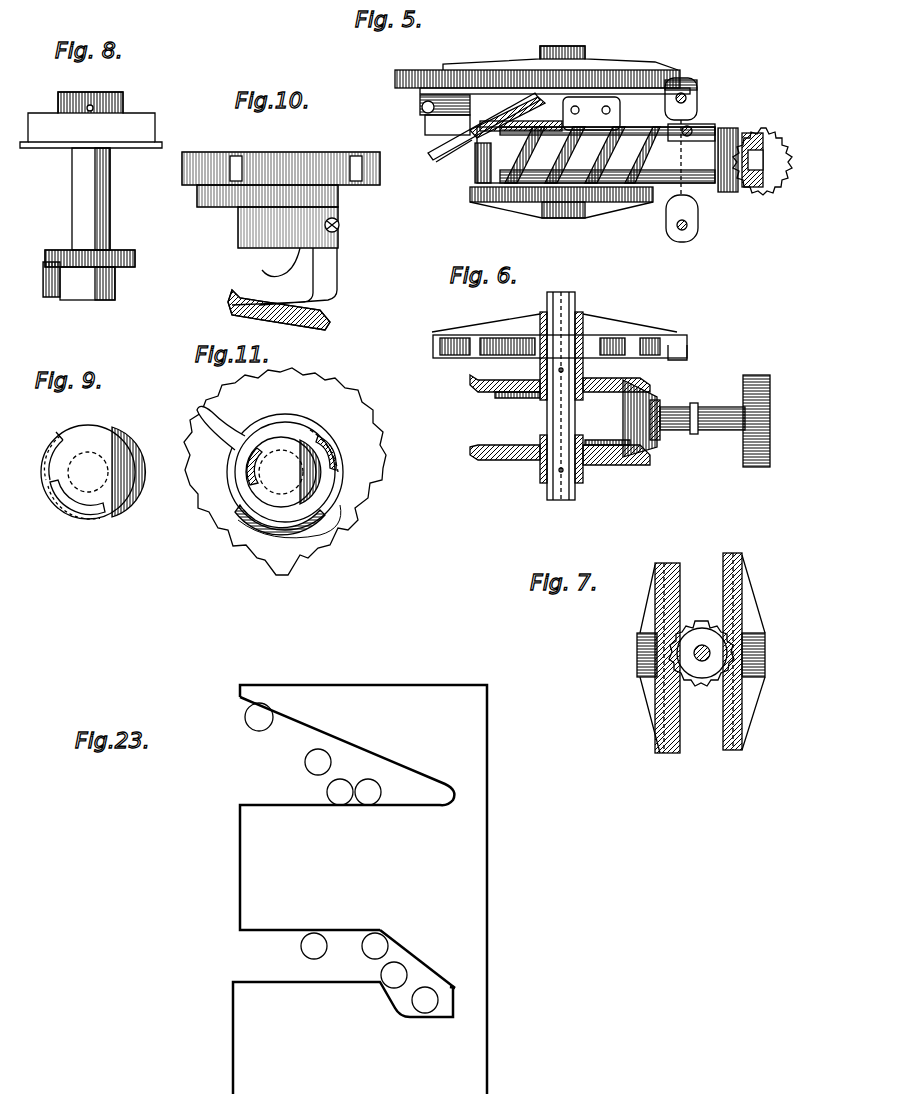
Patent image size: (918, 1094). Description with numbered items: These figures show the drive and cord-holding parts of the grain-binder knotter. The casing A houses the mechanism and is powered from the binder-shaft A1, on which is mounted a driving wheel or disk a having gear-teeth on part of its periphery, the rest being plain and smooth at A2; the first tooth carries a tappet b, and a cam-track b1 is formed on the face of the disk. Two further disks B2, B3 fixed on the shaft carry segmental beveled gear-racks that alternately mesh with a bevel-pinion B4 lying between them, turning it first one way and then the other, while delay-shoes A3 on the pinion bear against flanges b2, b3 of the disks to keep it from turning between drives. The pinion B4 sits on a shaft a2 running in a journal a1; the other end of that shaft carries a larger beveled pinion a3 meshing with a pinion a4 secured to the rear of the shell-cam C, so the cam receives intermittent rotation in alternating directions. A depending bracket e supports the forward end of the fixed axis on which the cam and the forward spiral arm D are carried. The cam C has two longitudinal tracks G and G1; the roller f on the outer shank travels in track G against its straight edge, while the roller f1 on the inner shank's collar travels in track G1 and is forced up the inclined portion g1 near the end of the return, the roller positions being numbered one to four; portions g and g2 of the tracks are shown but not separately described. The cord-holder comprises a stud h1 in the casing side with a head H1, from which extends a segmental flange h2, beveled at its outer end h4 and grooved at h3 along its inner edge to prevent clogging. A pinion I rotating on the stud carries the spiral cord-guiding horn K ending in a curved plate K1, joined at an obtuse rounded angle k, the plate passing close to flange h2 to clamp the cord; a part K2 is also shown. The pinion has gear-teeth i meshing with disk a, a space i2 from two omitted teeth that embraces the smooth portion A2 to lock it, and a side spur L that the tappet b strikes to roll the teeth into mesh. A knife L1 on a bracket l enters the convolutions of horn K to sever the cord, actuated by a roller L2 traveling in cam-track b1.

In FIG. 8, the casing A is at (128, 112).
In FIG. 8, the stud h1 is at (80, 210).
In FIG. 9, the stud h1 is at (88, 472).
In FIG. 8, the segmental flange h2 is at (92, 300).
In FIG. 9, the segmental flange h2 is at (70, 506).
In FIG. 11, the segmental flange h2 is at (281, 478).
In FIG. 5, the segmental flange h2 is at (480, 103).
In FIG. 8, the recess or groove h3 is at (46, 258).
In FIG. 8, the beveled outer end h4 is at (50, 297).
In FIG. 9, the beveled outer end h4 is at (62, 437).
In FIG. 11, the beveled outer end h4 is at (266, 462).
In FIG. 5, the beveled outer end h4 is at (424, 138).
In FIG. 8, the head H1 is at (118, 266).
In FIG. 9, the head H1 is at (93, 472).
In FIG. 11, the head H1 is at (283, 472).
In FIG. 5, the head H1 is at (431, 115).
In FIG. 10, the pinion I is at (243, 152).
In FIG. 11, the pinion I is at (284, 418).
In FIG. 5, the pinion I is at (421, 70).
In FIG. 10, the gear-teeth i is at (356, 168).
In FIG. 11, the gear-teeth i is at (330, 392).
In FIG. 10, the space i2 is at (237, 168).
In FIG. 11, the space i2 is at (248, 402).
In FIG. 10, the side spur L is at (210, 207).
In FIG. 11, the side spur L is at (270, 463).
In FIG. 10, the obtuse rounded angle k is at (282, 272).
In FIG. 10, the spiral cord-guiding horn K is at (310, 326).
In FIG. 11, the spiral cord-guiding horn K is at (298, 522).
In FIG. 5, the spiral cord-guiding horn K is at (446, 162).
In FIG. 11, the curved plate K1 is at (340, 470).
In FIG. 5, the curved plate K1 is at (422, 122).
In FIG. 10, the spring block K2 is at (328, 270).
In FIG. 5, the knife L1 is at (474, 131).
In FIG. 5, the projecting roller L2 is at (598, 97).
In FIG. 5, the bracket l is at (507, 113).
In FIG. 6, the binder-shaft A1 is at (565, 495).
In FIG. 5, the plain smooth portion of periphery A2 is at (518, 62).
In FIG. 6, the plain smooth portion of periphery A2 is at (433, 336).
In FIG. 7, the delay-shoes A3 is at (672, 665).
In FIG. 5, the driving wheel or disk a is at (620, 64).
In FIG. 6, the driving wheel or disk a is at (560, 346).
In FIG. 6, the journal a1 is at (716, 410).
In FIG. 6, the shaft a2 is at (697, 419).
In FIG. 7, the shaft a2 is at (702, 662).
In FIG. 5, the beveled pinion a3 is at (772, 161).
In FIG. 6, the beveled pinion a3 is at (770, 420).
In FIG. 5, the pinion a4 is at (728, 192).
In FIG. 5, the disk B2 is at (510, 131).
In FIG. 6, the disk B2 is at (471, 388).
In FIG. 7, the disk B2 is at (676, 562).
In FIG. 5, the disk B3 is at (470, 195).
In FIG. 6, the disk B3 is at (471, 453).
In FIG. 7, the disk B3 is at (733, 553).
In FIG. 6, the bevel-pinion B4 is at (624, 416).
In FIG. 7, the bevel-pinion B4 is at (702, 622).
In FIG. 5, the tappet b is at (700, 97).
In FIG. 6, the tappet b is at (687, 358).
In FIG. 6, the cam-track b1 is at (640, 358).
In FIG. 6, the flange b2 is at (657, 395).
In FIG. 7, the flange b2 is at (728, 560).
In FIG. 6, the flange b3 is at (658, 450).
In FIG. 7, the flange b3 is at (679, 560).
In FIG. 5, the shell-cam C is at (596, 155).
In FIG. 23, the shell-cam C is at (363, 889).
In FIG. 5, the forward spiral arm D is at (582, 155).
In FIG. 5, the depending bracket e is at (476, 165).
In FIG. 23, the pin and roller f is at (266, 705).
In FIG. 5, the anti-friction roller f1 is at (695, 126).
In FIG. 23, the anti-friction roller f1 is at (316, 955).
In FIG. 23, the track G is at (347, 813).
In FIG. 23, the track G1 is at (254, 959).
In FIG. 23, the guide edge g is at (358, 918).
In FIG. 23, the inclined portion g1 is at (405, 966).
In FIG. 23, the guide pocket g2 is at (440, 985).